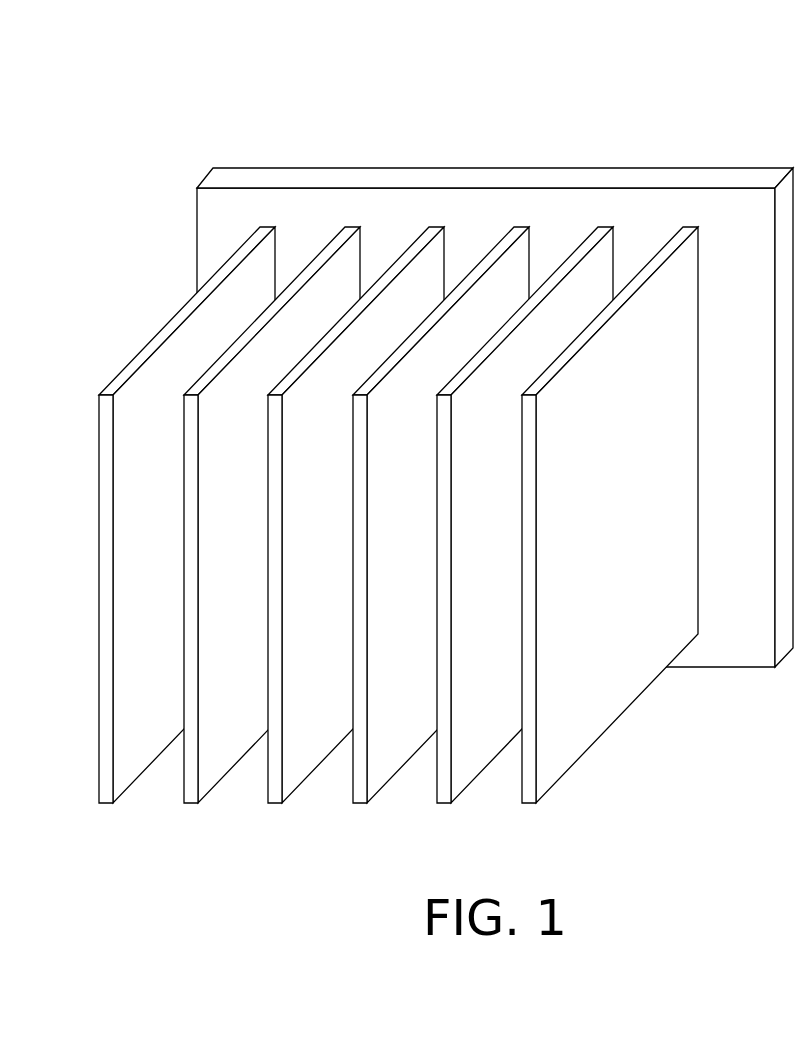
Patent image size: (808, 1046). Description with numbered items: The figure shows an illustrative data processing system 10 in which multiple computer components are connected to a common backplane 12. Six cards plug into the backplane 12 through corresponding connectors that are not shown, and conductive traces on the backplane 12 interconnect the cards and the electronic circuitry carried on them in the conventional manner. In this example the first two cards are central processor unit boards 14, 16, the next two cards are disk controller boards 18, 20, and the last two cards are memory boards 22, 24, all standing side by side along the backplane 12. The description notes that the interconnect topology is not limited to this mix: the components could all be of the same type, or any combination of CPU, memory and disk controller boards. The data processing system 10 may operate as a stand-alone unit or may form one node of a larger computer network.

The data processing system 10 is at (430, 455).
The backplane 12 is at (722, 168).
The central processor unit board 14 is at (98, 790).
The central processor unit board 16 is at (183, 790).
The disk controller board 18 is at (267, 790).
The disk controller board 20 is at (352, 790).
The memory board 22 is at (436, 790).
The memory board 24 is at (521, 790).